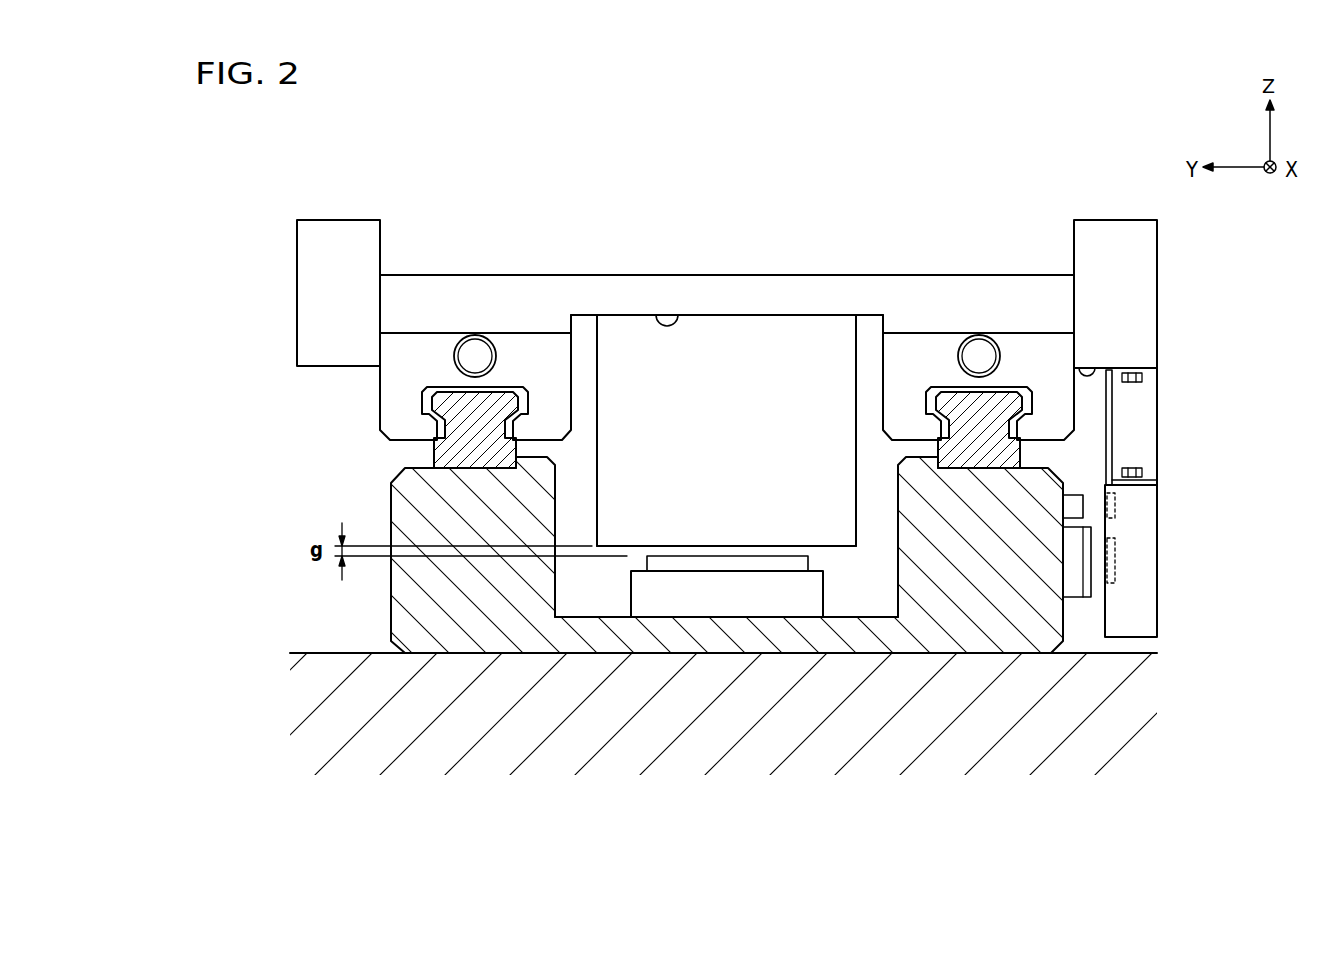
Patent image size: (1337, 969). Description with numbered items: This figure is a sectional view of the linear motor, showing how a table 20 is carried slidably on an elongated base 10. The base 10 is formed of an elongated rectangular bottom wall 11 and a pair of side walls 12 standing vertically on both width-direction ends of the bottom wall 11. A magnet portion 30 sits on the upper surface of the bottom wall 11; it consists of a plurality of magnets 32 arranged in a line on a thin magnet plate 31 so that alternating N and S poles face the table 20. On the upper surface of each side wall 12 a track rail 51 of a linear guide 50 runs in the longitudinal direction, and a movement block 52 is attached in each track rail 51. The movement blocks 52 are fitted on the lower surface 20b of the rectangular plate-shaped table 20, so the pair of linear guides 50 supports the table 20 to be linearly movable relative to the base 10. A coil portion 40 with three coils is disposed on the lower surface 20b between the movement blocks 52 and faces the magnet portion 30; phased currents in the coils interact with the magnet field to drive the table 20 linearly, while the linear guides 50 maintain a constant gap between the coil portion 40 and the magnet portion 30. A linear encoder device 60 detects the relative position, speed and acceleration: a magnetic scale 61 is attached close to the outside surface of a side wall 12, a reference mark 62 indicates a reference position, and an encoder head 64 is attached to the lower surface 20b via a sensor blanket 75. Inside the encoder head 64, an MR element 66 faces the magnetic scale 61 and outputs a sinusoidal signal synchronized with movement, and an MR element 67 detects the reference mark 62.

The base 10 is at (726, 672).
The bottom wall 11 is at (860, 643).
The side wall 12 is at (483, 615).
The table 20 is at (723, 292).
The lower surface 20b is at (678, 313).
The magnet portion 30 is at (744, 705).
The magnet plate 31 is at (783, 556).
The magnet 32 is at (755, 610).
The coil portion 40 is at (770, 340).
The linear guide 50 is at (268, 392).
The track rail 51 is at (442, 455).
The movement block 52 is at (412, 363).
The linear encoder device 60 is at (1174, 502).
The magnetic scale 61 is at (1094, 596).
The reference mark 62 is at (1083, 507).
The encoder head 64 is at (1137, 586).
The MR element 66 is at (1115, 553).
The MR element 67 is at (1168, 491).
The sensor blanket 75 is at (1112, 458).